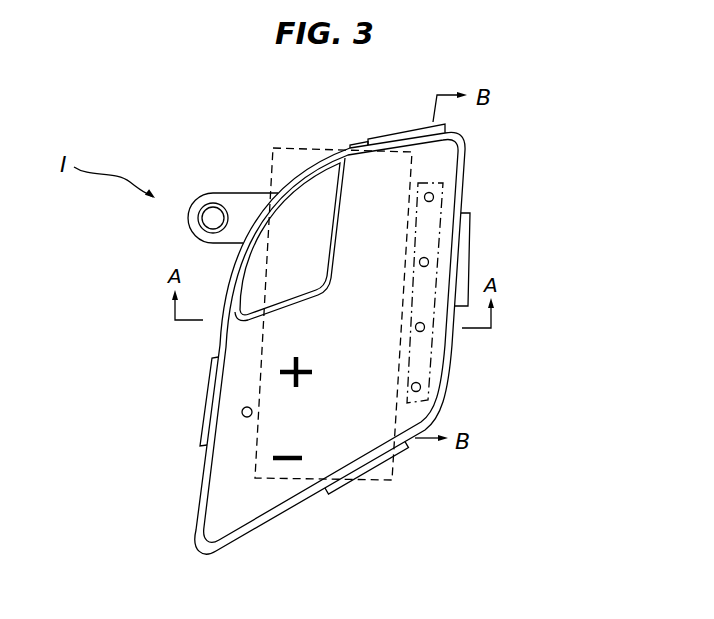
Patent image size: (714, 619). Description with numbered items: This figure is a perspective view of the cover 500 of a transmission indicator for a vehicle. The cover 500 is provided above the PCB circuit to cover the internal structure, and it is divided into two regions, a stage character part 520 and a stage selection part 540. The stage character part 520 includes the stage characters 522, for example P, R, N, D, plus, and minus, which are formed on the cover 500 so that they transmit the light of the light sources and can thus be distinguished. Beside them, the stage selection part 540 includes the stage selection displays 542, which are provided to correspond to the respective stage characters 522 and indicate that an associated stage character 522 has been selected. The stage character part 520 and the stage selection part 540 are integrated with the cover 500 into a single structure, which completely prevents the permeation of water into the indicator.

The cover 500 is at (245, 427).
The stage character part 520 is at (255, 352).
The stage characters 522 is at (374, 181).
The stage selection part 540 is at (441, 241).
The stage selection displays 542 is at (434, 197).